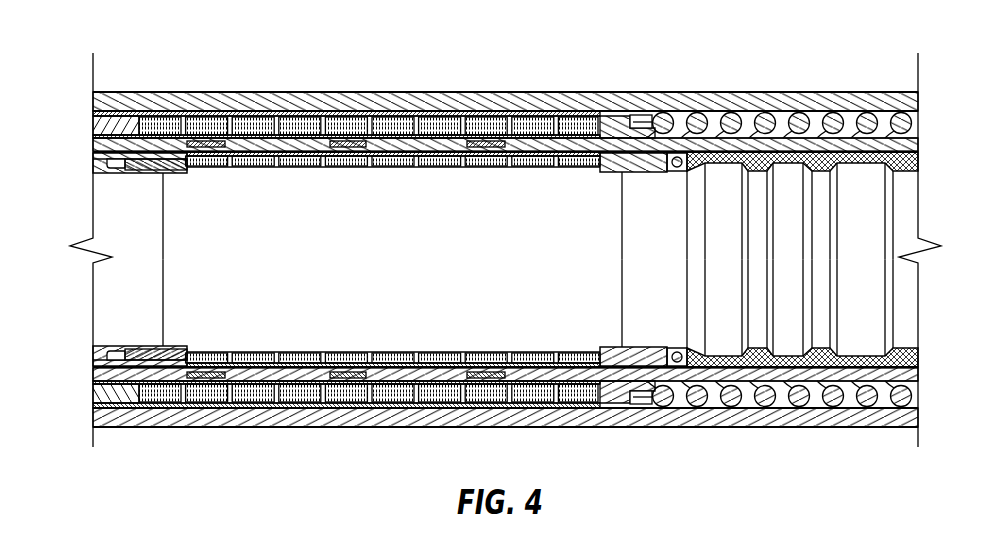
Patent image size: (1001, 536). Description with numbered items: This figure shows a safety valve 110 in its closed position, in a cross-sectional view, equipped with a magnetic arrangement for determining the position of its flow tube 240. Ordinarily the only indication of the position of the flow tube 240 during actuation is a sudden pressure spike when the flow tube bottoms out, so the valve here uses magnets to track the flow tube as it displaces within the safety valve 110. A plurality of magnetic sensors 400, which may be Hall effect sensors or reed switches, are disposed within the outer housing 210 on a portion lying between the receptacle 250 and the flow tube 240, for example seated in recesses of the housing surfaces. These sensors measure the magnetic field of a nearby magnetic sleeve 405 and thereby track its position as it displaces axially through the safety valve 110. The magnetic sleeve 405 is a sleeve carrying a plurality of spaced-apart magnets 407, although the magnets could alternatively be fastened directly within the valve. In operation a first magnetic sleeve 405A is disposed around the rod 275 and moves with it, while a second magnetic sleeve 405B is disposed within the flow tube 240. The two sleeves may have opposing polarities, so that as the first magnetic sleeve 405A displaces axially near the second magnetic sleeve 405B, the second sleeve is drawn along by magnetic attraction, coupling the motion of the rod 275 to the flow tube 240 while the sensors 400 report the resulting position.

The safety valve 110 is at (483, 253).
The outer housing 210 is at (96, 141).
The flow tube 240 is at (645, 157).
The receptacle 250 is at (186, 140).
The rod 275 is at (113, 118).
The magnetic sensor 400 is at (213, 142).
The magnetic sleeve 405 is at (543, 157).
The first magnetic sleeve 405A is at (603, 127).
The second magnetic sleeve 405B is at (404, 89).
The magnets 407 is at (300, 123).